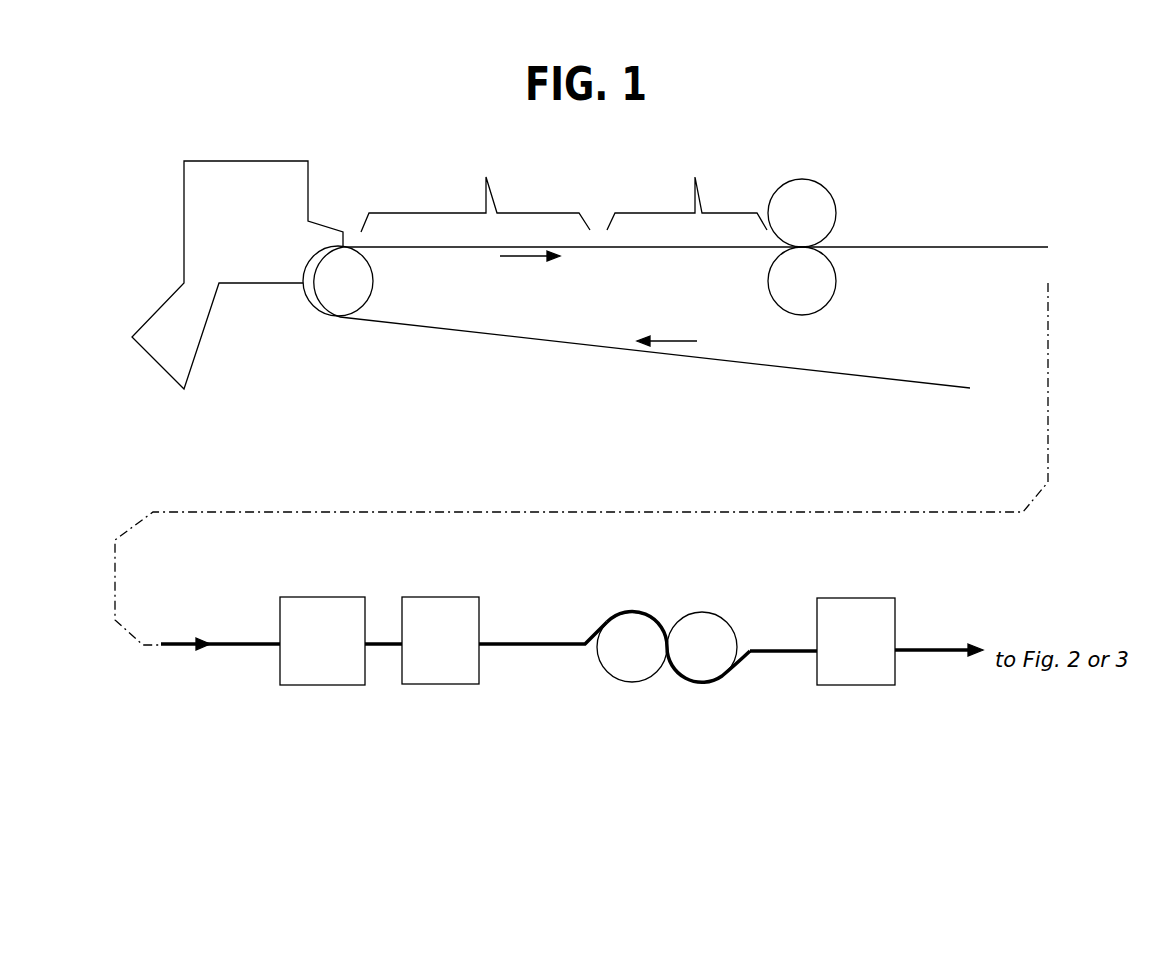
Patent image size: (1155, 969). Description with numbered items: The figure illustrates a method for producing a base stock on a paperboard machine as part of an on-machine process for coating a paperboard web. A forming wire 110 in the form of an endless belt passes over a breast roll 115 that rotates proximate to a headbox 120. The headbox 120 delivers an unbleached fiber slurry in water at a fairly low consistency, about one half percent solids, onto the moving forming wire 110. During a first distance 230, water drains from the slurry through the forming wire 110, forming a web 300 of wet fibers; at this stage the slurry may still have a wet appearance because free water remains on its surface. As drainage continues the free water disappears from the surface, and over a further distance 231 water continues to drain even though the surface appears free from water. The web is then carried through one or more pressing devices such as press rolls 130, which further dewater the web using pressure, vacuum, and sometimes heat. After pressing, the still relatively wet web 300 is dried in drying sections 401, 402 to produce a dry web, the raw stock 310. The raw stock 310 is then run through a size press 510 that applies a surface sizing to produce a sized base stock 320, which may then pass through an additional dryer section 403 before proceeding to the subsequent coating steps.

The forming wire 110 is at (890, 248).
The breast roll 115 is at (320, 293).
The headbox 120 is at (233, 218).
The press rolls 130 is at (779, 237).
The first distance 230 is at (475, 187).
The distance 231 is at (687, 186).
The web 300 is at (247, 644).
The raw stock 310 is at (557, 647).
The base stock 320 is at (790, 652).
The drying section 401 is at (304, 637).
The drying section 402 is at (422, 637).
The additional dryer section 403 is at (837, 638).
The size press 510 is at (624, 609).